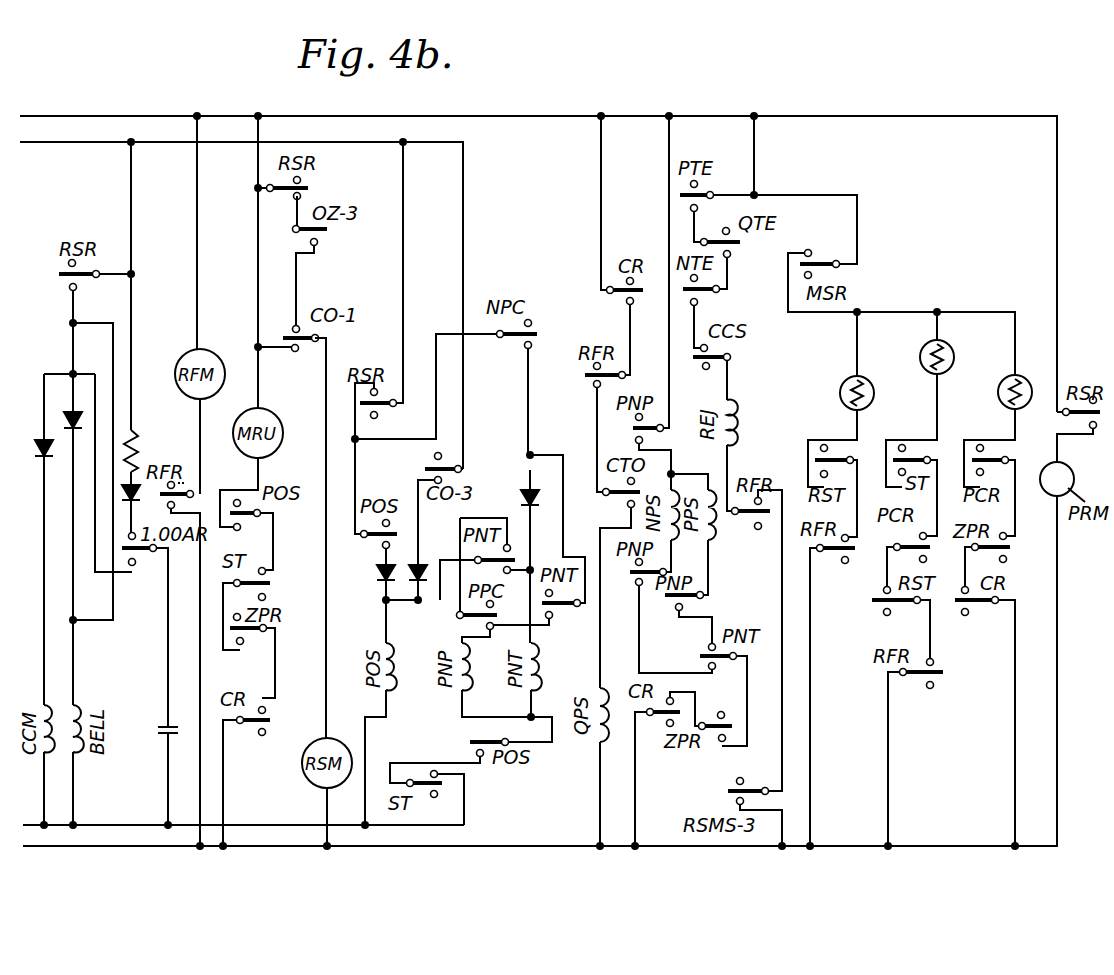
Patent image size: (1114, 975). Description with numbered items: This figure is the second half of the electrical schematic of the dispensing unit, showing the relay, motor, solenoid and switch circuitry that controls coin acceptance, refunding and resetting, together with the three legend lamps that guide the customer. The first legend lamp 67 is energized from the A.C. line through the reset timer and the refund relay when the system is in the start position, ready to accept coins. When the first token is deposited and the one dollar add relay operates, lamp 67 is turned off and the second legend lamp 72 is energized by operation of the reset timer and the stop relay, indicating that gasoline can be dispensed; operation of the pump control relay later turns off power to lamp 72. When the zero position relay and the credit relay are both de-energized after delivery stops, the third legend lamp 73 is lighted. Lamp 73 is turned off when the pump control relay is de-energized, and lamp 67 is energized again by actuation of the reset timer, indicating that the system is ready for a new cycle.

The first legend lamp 67 is at (840, 394).
The second legend lamp 72 is at (920, 358).
The third legend lamp 73 is at (998, 398).